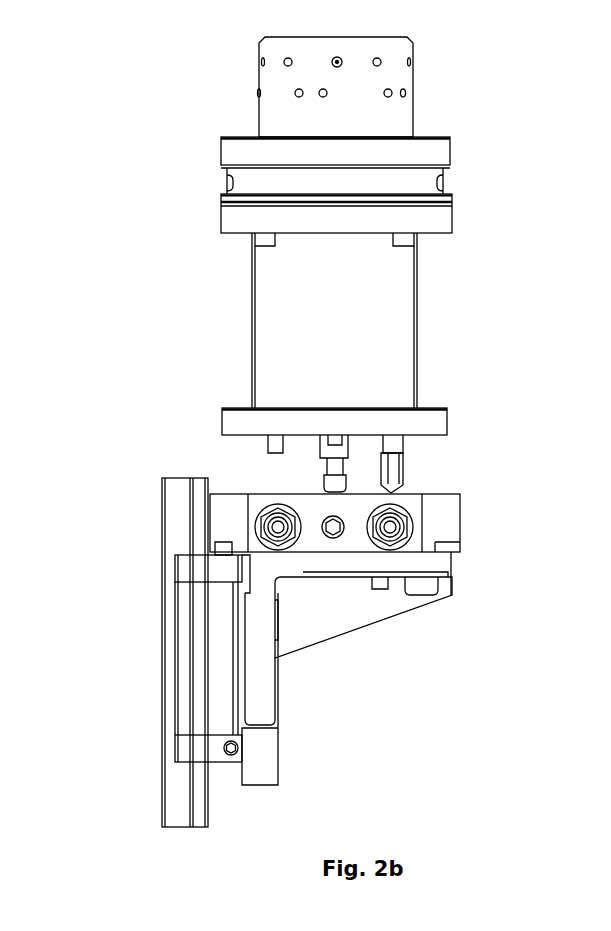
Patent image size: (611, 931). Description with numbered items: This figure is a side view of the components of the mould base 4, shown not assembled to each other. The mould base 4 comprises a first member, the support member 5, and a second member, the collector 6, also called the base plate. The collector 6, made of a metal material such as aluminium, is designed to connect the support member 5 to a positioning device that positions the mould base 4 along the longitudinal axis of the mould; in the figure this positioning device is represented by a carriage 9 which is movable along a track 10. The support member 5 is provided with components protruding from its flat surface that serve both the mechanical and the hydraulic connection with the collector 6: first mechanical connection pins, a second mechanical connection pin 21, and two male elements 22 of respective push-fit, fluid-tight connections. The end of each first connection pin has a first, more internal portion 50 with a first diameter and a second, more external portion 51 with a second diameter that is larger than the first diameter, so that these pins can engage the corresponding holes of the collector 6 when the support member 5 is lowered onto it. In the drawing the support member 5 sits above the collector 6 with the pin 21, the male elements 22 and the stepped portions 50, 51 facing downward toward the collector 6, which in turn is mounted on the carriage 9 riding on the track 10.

The mould base 4 is at (537, 195).
The support member 5 is at (427, 340).
The male elements 22 is at (272, 447).
The first portion 50 is at (327, 464).
The second portion 51 is at (327, 484).
The second mechanical connection pin 21 is at (392, 478).
The collector 6 is at (468, 545).
The carriage 9 is at (340, 617).
The track 10 is at (183, 527).